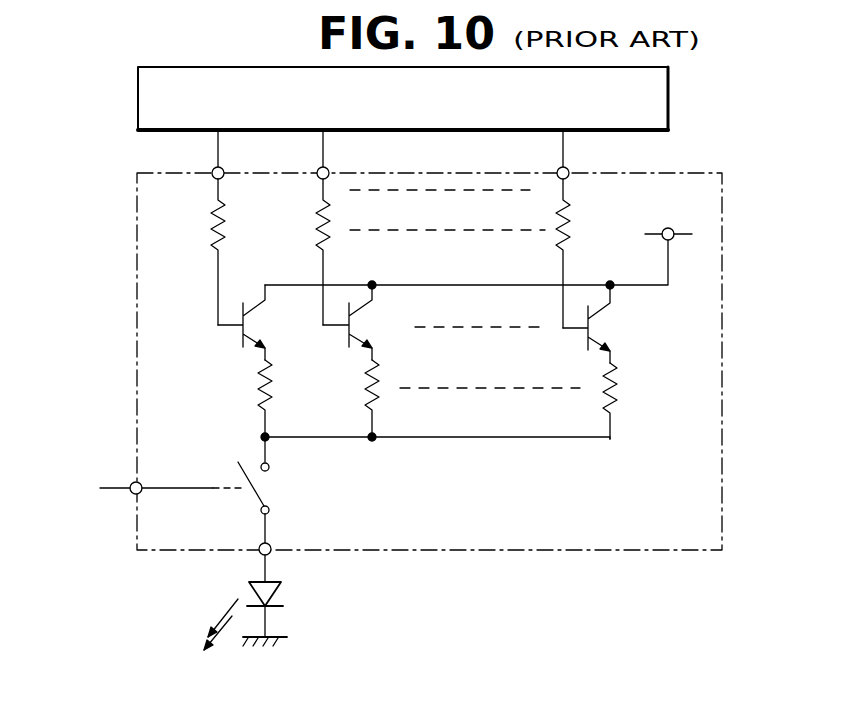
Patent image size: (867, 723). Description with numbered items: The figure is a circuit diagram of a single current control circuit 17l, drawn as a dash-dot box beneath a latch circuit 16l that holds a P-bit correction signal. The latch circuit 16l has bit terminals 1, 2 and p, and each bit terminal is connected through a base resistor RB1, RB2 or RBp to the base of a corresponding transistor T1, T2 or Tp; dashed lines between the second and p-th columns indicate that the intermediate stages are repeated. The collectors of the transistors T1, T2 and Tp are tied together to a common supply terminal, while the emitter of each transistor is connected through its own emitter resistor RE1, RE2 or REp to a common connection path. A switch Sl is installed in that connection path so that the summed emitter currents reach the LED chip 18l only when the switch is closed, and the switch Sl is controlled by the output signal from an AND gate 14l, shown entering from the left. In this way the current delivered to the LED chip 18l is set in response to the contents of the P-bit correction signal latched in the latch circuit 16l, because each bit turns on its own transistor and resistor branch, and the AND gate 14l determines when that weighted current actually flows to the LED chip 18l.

The latch circuit 16l is at (672, 103).
The current control circuit 17l is at (723, 246).
The AND gate 14l is at (147, 490).
The LED chip 18l is at (282, 594).
The switch Sl is at (270, 489).
The bit terminal 1 is at (210, 165).
The bit terminal 2 is at (315, 165).
The bit terminal p is at (556, 165).
The resistor RB1 is at (194, 252).
The resistor RB2 is at (299, 252).
The resistor RBp is at (585, 253).
The transistor T1 is at (236, 333).
The transistor T2 is at (370, 325).
The transistor Tp is at (604, 330).
The resistor RE1 is at (252, 383).
The resistor RE2 is at (363, 383).
The resistor REp is at (618, 394).